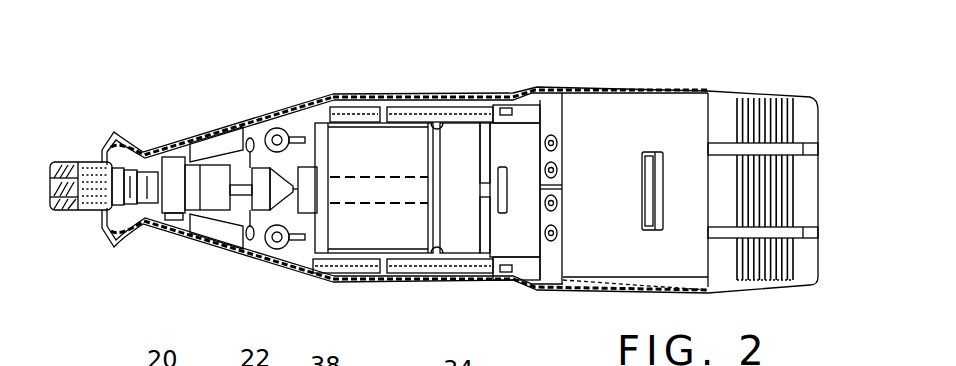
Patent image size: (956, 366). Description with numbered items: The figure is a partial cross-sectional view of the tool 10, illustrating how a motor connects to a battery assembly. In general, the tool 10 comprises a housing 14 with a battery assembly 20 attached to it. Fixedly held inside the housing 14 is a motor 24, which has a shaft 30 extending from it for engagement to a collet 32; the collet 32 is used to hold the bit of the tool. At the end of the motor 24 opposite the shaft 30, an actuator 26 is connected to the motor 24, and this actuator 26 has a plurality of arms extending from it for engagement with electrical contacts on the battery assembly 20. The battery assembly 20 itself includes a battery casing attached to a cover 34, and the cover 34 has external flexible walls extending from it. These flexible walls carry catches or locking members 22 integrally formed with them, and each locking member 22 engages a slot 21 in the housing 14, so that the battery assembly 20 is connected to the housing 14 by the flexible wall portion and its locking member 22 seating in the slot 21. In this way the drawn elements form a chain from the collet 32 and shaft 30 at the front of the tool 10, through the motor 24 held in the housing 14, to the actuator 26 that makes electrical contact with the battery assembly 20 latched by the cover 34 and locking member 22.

The tool 10 is at (183, 112).
The housing 14 is at (460, 93).
The battery assembly 20 is at (728, 87).
The slot 21 is at (647, 160).
The locking member 22 is at (650, 207).
The motor 24 is at (362, 228).
The actuator 26 is at (513, 233).
The shaft 30 is at (205, 177).
The collet 32 is at (85, 168).
The cover 34 is at (800, 113).